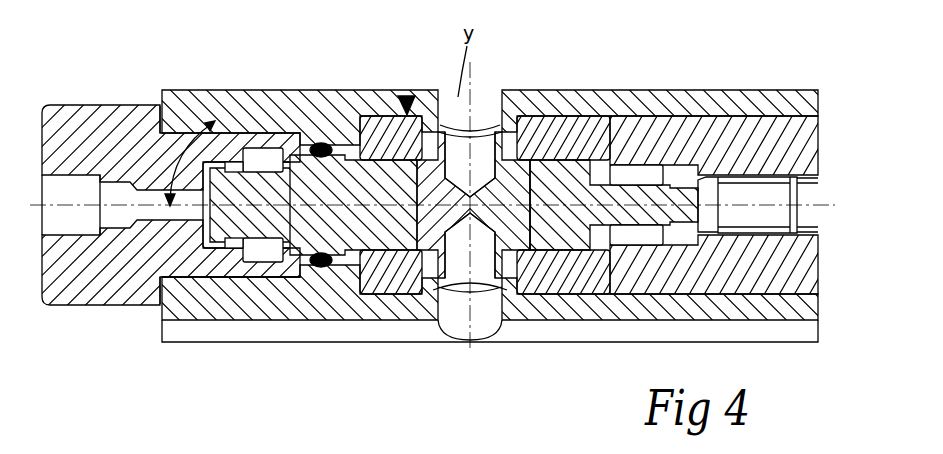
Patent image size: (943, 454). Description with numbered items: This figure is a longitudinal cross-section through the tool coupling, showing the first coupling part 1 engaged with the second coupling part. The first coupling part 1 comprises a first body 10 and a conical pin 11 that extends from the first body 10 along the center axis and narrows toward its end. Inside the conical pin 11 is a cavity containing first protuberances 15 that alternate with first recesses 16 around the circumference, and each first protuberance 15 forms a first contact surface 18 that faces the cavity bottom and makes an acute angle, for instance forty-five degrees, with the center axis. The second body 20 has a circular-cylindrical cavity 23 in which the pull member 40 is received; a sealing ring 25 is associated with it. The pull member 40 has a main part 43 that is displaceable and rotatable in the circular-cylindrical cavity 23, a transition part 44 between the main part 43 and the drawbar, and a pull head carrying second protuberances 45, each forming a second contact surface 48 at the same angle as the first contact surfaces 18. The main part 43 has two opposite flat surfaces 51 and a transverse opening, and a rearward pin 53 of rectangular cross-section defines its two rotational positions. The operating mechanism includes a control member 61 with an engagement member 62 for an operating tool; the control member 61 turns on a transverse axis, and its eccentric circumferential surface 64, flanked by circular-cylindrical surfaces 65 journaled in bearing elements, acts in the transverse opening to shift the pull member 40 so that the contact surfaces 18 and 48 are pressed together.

The first coupling part 1 is at (471, 227).
The first body 10 is at (78, 277).
The conical pin 11 is at (193, 268).
The first protuberances 15 is at (471, 227).
The first recesses 16 is at (267, 243).
The first contact surface 18 is at (226, 243).
The second body 20 is at (335, 103).
The circular-cylindrical cavity 23 is at (590, 123).
The sealing ring 25 is at (313, 265).
The pull member 40 is at (407, 100).
The main part 43 is at (674, 215).
The transition part 44 is at (353, 269).
The second protuberances 45 is at (257, 190).
The second contact surface 48 is at (253, 190).
The flat surfaces 51 is at (481, 221).
The pin 53 is at (640, 193).
The control member 61 is at (471, 227).
The engagement member 62 is at (482, 145).
The eccentric circumferential surface 64 is at (530, 217).
The circular-cylindrical surfaces 65 is at (518, 265).